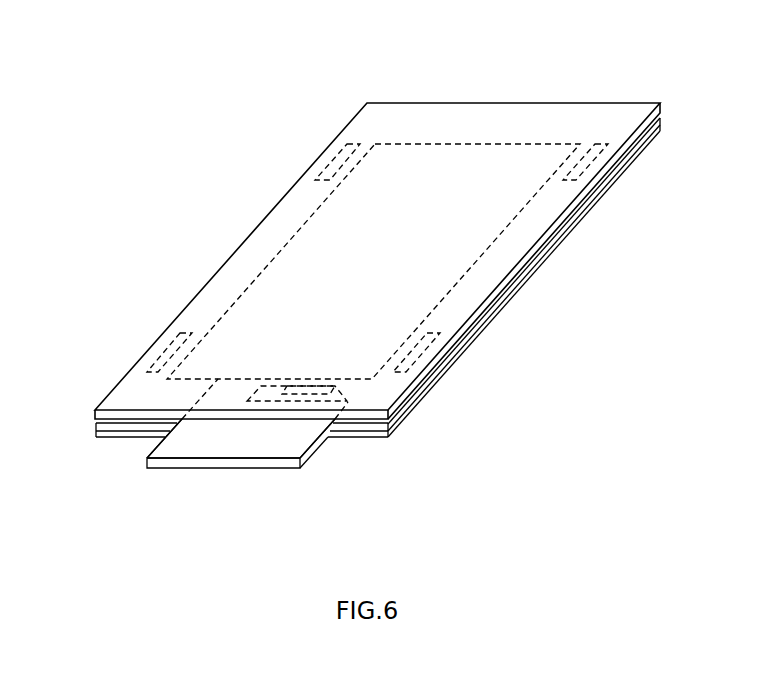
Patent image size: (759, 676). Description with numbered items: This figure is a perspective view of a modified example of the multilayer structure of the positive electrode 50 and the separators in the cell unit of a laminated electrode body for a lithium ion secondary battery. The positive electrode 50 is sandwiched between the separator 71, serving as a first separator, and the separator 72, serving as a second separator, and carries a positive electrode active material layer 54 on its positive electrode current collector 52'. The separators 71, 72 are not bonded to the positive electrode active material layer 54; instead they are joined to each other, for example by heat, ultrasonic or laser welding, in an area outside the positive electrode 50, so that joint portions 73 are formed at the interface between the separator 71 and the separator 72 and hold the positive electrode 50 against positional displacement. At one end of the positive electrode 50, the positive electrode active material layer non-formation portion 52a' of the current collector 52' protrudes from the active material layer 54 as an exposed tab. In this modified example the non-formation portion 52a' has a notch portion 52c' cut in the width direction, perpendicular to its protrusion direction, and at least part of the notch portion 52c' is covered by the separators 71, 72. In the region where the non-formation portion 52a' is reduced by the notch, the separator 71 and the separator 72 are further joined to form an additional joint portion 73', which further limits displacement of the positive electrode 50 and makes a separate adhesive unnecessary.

The positive electrode 50 is at (161, 474).
The positive electrode current collector 52' is at (250, 467).
The positive electrode active material layer non-formation portion 52a' is at (241, 479).
The notch portion 52c' is at (179, 399).
The positive electrode active material layer 54 is at (460, 163).
The separator 71 is at (422, 402).
The separator 72 is at (581, 118).
The joint portions 73 is at (400, 258).
The joint portion 73' is at (332, 446).